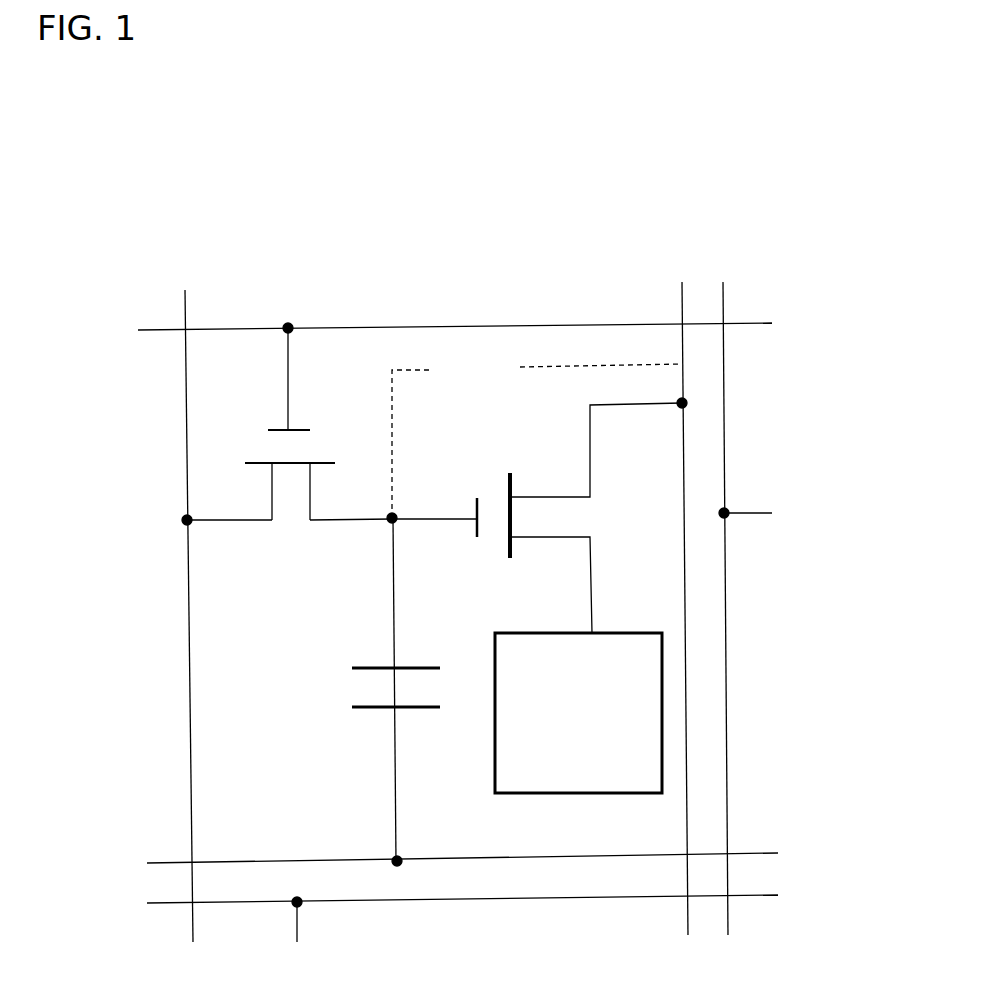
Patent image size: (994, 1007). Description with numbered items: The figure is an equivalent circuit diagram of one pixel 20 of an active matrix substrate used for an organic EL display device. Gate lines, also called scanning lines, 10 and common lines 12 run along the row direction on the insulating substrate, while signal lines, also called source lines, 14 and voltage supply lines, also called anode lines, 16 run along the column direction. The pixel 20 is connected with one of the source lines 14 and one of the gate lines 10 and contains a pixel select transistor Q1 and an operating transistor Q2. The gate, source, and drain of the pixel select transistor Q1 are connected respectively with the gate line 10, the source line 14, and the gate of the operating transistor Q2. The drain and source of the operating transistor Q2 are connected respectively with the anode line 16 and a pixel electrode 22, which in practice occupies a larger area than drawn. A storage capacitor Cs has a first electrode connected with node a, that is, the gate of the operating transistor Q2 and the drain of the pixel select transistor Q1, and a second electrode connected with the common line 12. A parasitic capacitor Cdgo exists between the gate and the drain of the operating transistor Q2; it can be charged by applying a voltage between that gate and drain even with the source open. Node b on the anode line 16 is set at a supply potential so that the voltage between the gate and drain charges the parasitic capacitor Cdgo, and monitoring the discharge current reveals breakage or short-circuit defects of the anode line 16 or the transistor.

The gate line 10 is at (222, 329).
The common line 12 is at (343, 863).
The signal line 14 is at (188, 603).
The voltage supply line 16 is at (682, 448).
The pixel 20 is at (797, 328).
The pixel electrode 22 is at (662, 702).
The pixel select transistor Q1 is at (289, 442).
The operating transistor Q2 is at (551, 518).
The storage capacitor Cs is at (371, 690).
The parasitic capacitor Cdgo is at (537, 434).
The node a is at (397, 513).
The node b is at (682, 403).